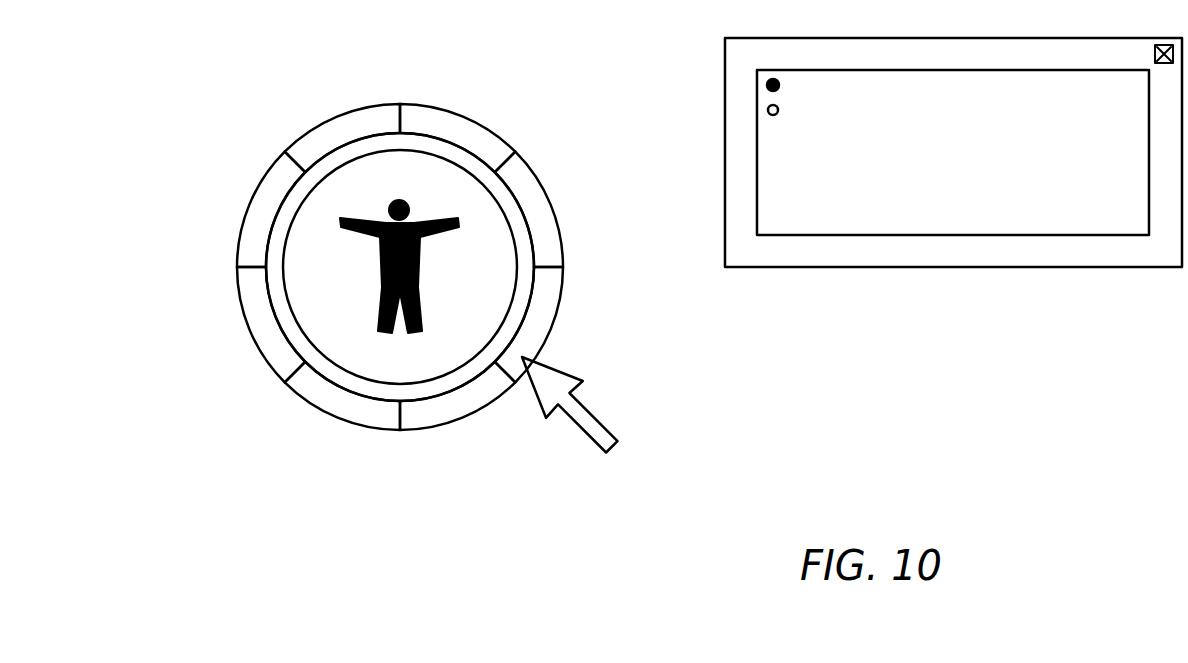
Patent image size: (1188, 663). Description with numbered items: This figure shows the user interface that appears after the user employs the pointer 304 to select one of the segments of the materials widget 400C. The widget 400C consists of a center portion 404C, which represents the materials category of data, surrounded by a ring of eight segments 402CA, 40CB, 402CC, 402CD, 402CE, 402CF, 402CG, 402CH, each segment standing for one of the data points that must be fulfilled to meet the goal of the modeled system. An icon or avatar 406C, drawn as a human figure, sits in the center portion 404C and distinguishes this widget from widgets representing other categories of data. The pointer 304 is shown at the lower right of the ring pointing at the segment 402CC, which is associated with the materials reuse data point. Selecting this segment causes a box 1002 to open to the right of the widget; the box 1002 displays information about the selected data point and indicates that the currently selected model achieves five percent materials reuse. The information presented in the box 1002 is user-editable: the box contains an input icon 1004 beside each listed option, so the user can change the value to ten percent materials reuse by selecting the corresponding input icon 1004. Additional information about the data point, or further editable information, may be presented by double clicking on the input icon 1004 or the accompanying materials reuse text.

The materials widget 400C is at (496, 34).
The segment 402CA is at (472, 137).
The segment 40CB is at (545, 210).
The segment 402CC is at (542, 315).
The segment 402CD is at (475, 423).
The segment 402CE is at (328, 428).
The segment 402CF is at (255, 357).
The segment 402CG is at (253, 198).
The segment 402CH is at (355, 123).
The center portion 404C is at (492, 268).
The icon or avatar 406C is at (385, 288).
The pointer 304 is at (595, 443).
The box 1002 is at (922, 270).
The input icon 1004 is at (768, 110).